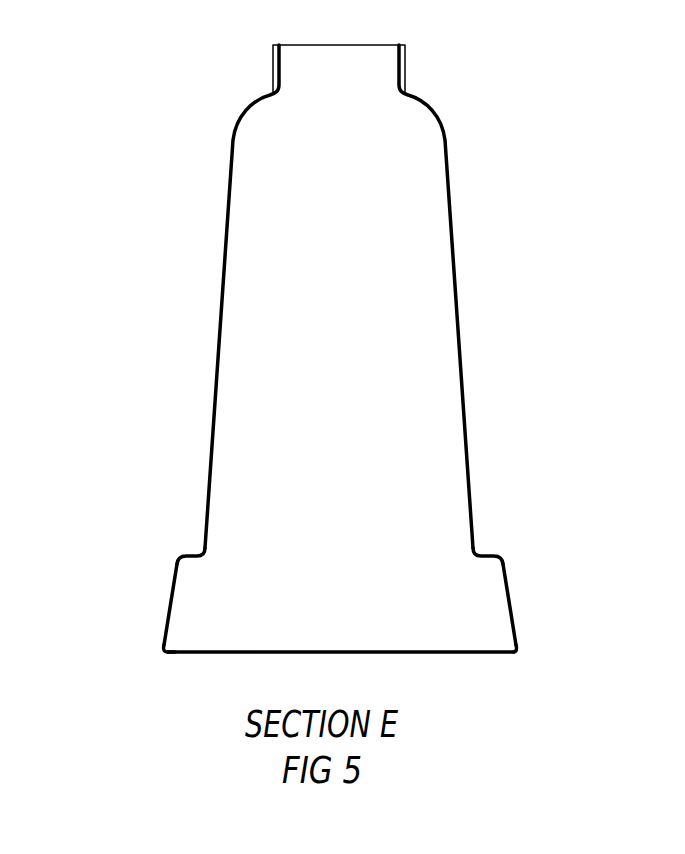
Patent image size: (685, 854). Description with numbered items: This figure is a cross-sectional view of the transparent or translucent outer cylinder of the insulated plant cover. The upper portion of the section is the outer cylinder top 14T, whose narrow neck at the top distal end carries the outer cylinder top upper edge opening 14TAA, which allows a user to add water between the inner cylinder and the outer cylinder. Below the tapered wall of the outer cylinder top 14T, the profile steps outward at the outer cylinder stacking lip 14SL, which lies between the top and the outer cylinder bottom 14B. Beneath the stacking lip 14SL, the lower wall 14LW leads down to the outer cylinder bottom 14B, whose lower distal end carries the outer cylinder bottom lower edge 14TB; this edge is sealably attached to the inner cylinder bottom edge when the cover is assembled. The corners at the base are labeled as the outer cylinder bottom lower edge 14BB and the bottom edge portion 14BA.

The outer cylinder top upper edge opening 14TAA is at (273, 65).
The outer cylinder top 14T is at (222, 283).
The outer cylinder stacking lip 14SL is at (492, 546).
The lower wall of inner member 14LW is at (506, 588).
The outer cylinder bottom lower edge 14TB is at (238, 650).
The outer cylinder bottom 14B is at (162, 647).
The outer cylinder bottom lower edge 14BB is at (163, 651).
The bottom annular edge of inner member 14BA is at (518, 645).